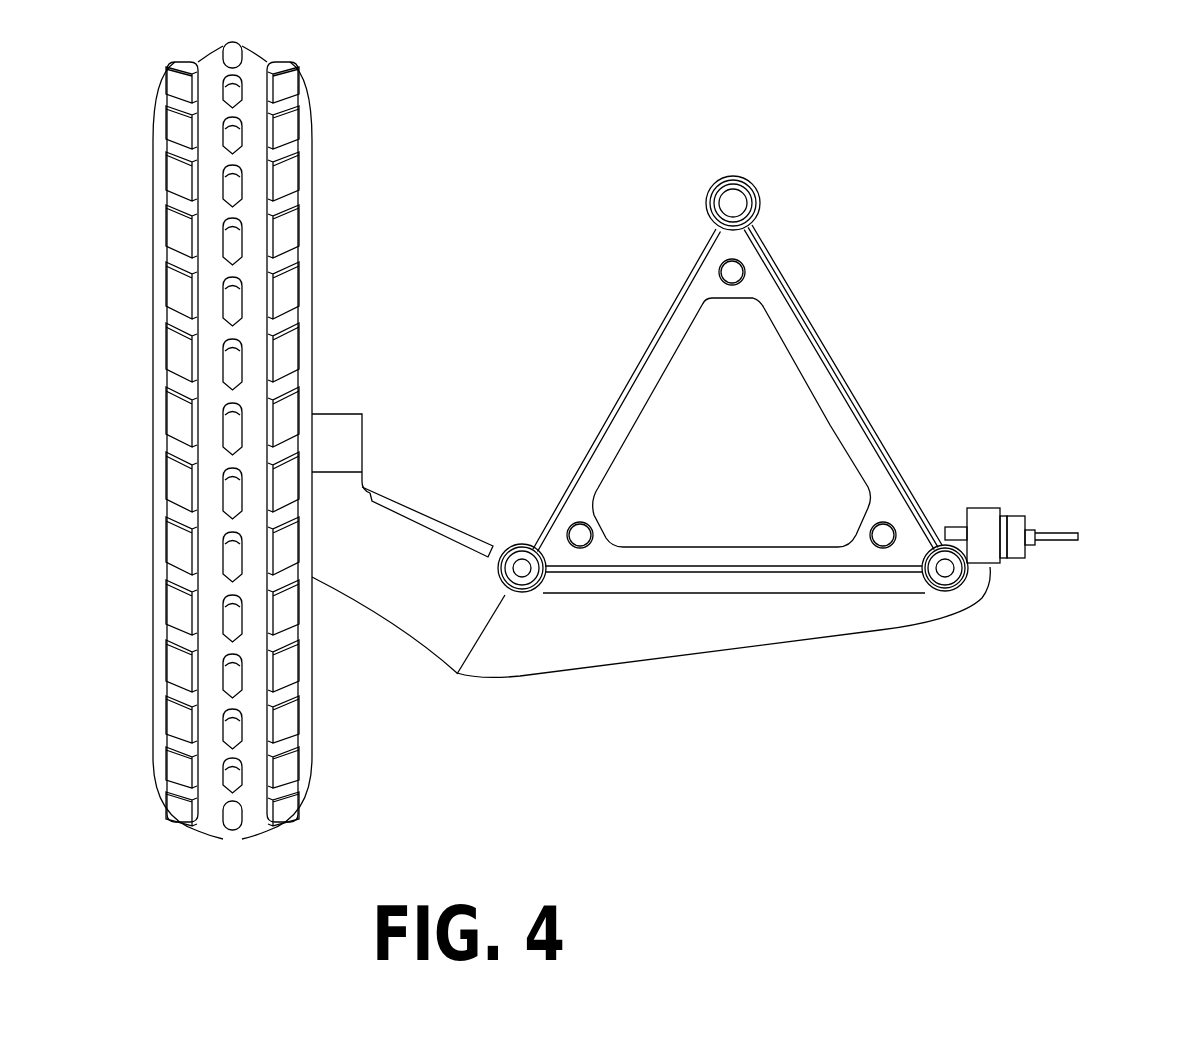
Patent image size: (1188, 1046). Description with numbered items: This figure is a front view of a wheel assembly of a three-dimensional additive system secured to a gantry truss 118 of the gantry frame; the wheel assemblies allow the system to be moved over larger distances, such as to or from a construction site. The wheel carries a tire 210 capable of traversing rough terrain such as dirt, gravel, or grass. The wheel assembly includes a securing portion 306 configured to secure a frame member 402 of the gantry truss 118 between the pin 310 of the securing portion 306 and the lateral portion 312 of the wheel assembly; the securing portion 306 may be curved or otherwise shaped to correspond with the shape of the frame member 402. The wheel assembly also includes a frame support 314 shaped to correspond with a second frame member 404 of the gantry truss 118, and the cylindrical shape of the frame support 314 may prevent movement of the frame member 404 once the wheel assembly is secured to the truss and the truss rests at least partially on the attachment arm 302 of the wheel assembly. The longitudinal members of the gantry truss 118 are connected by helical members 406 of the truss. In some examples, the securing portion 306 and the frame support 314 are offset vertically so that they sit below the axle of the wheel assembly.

The tire 210 is at (170, 99).
The gantry truss 118 is at (793, 438).
The attachment arm 302 is at (651, 583).
The securing portion 306 is at (1053, 482).
The pin 310 is at (951, 528).
The lateral portion 312 is at (695, 593).
The frame support 314 is at (456, 674).
The frame member 402 is at (962, 577).
The frame member 404 is at (540, 580).
The helical members 406 is at (770, 558).